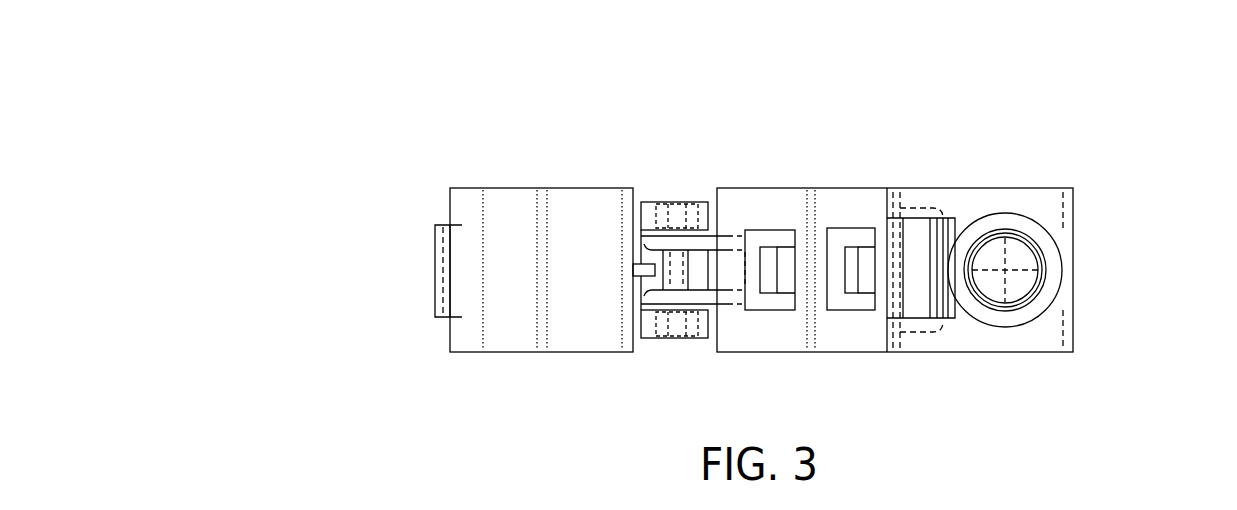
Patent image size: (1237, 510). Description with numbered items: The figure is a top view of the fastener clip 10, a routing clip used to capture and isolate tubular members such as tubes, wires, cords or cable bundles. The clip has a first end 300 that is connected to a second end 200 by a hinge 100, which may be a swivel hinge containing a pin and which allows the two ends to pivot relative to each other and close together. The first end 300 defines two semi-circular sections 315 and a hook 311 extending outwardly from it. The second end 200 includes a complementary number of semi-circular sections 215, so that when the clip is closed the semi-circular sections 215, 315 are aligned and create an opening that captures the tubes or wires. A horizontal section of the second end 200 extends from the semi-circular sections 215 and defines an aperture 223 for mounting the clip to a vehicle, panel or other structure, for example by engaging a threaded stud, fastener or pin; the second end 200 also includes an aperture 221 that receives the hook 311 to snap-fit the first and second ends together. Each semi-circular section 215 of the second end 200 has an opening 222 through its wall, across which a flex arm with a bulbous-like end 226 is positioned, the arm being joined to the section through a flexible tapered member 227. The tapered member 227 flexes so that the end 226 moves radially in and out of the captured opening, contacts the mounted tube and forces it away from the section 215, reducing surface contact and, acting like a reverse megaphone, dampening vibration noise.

The fastener clip 10 is at (862, 95).
The hinge 100 is at (675, 205).
The second end 200 is at (953, 343).
The semi-circular sections 215 is at (841, 202).
The aperture 221 is at (917, 260).
The opening 222 is at (757, 233).
The aperture 223 is at (1023, 263).
The bulbous-like end 226 is at (847, 293).
The flexible tapered member 227 is at (758, 293).
The first end 300 is at (473, 353).
The hook 311 is at (435, 274).
The semi-circular sections 315 is at (568, 205).